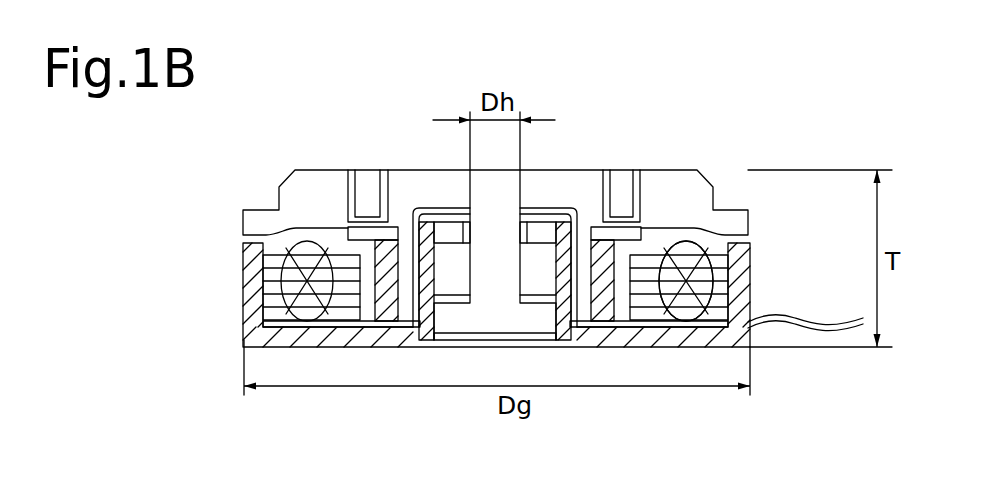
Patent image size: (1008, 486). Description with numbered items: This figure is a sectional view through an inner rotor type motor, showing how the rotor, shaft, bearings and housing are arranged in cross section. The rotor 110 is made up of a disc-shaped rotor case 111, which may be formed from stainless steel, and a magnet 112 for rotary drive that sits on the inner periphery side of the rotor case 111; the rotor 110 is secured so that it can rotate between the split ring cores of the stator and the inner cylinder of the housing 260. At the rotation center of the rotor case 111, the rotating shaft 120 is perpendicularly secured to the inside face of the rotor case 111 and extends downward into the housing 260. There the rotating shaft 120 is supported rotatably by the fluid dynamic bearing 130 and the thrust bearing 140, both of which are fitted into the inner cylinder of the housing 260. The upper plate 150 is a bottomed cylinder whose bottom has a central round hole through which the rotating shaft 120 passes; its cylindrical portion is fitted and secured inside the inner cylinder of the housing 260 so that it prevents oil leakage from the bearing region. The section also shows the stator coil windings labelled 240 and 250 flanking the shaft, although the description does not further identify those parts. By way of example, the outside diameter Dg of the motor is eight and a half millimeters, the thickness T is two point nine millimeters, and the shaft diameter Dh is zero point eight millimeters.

The rotor 110 is at (285, 174).
The rotor case 111 is at (337, 183).
The magnet 112 is at (377, 260).
The rotating shaft 120 is at (492, 180).
The fluid dynamic bearing 130 is at (453, 290).
The thrust bearing 140 is at (544, 334).
The upper plate 150 is at (533, 228).
The coil 240 is at (713, 277).
The insulator 250 is at (698, 243).
The housing 260 is at (689, 336).